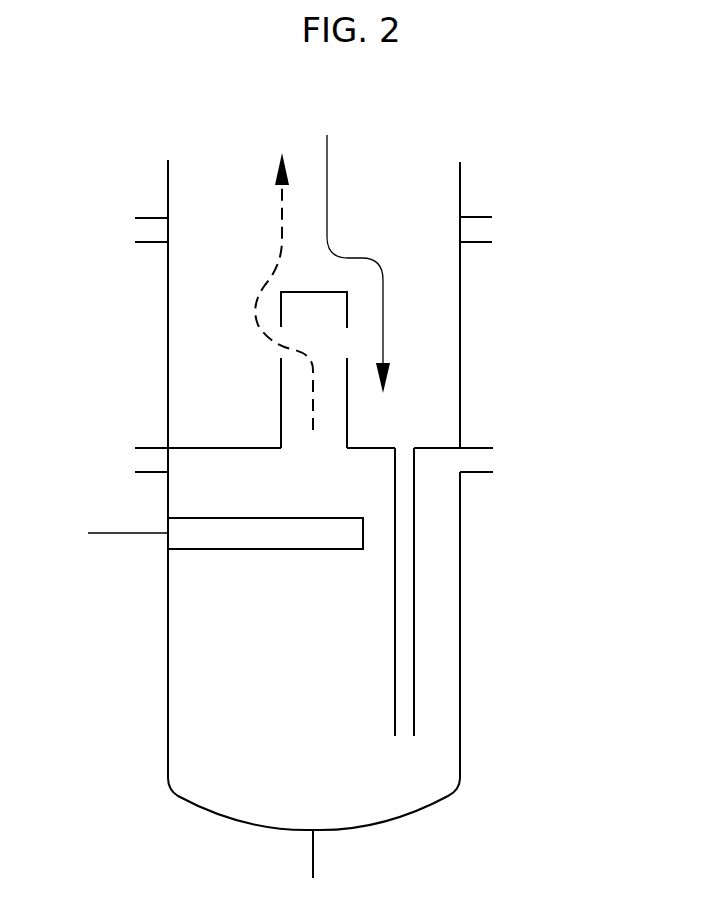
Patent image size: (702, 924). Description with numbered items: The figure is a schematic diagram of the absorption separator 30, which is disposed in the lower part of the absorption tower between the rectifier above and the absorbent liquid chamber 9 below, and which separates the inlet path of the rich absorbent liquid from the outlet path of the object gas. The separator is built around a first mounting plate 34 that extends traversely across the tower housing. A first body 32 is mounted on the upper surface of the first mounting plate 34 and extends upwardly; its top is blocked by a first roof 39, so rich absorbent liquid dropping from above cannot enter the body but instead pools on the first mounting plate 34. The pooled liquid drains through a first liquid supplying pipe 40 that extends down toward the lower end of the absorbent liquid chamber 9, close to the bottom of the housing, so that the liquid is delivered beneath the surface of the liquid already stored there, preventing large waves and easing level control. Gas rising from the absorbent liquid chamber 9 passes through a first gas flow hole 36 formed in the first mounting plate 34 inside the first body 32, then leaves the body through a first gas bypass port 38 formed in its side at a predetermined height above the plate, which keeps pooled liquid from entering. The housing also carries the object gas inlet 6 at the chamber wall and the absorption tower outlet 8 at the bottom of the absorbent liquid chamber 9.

The object gas inlet 6 is at (110, 533).
The absorption tower outlet 8 is at (317, 853).
The absorbent liquid chamber 9 is at (227, 808).
The absorption separator 30 is at (414, 277).
The first body 32 is at (348, 420).
The first mounting plate 34 is at (208, 448).
The first gas flow hole 36 is at (292, 480).
The first gas bypass port 38 is at (348, 342).
The first roof 39 is at (310, 292).
The first liquid supplying pipe 40 is at (405, 615).